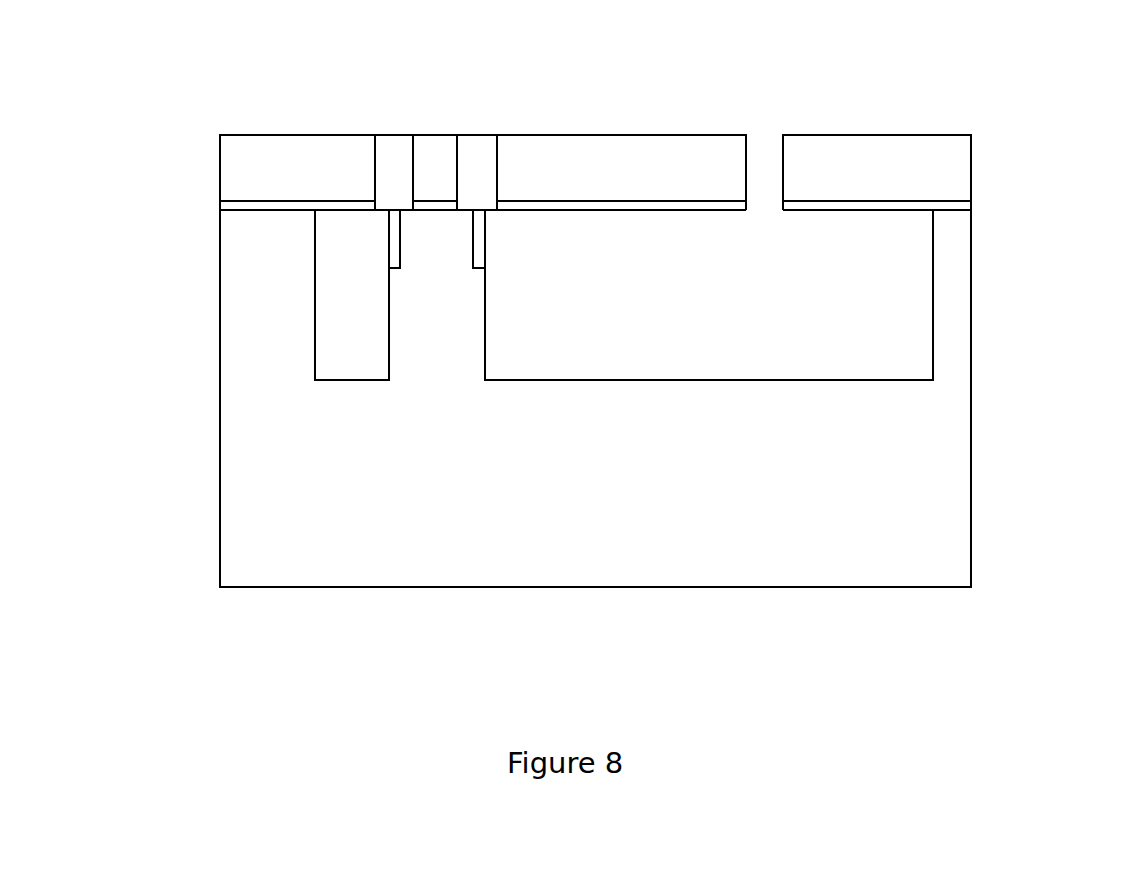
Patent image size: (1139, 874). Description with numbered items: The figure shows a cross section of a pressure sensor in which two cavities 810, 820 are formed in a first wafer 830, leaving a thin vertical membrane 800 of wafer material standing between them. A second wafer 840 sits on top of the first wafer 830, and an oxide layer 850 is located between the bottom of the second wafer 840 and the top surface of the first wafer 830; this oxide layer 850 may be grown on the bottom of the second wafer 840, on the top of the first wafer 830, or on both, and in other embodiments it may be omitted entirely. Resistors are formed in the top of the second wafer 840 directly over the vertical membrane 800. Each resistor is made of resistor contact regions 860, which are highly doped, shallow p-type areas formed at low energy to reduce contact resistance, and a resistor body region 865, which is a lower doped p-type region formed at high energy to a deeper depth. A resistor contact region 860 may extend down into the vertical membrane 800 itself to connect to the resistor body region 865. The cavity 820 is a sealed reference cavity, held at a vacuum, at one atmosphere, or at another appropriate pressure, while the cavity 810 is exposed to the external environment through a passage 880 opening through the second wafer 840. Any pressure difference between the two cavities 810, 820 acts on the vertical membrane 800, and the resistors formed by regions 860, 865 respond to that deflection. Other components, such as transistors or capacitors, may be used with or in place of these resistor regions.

The vertical membrane 800 is at (446, 284).
The cavity 810 is at (343, 323).
The cavity 820 is at (905, 267).
The first wafer 830 is at (932, 418).
The second wafer 840 is at (952, 163).
The oxide layer 850 is at (973, 200).
The resistor contact region 860 is at (382, 134).
The resistor body region 865 is at (395, 233).
The passage 880 is at (764, 173).